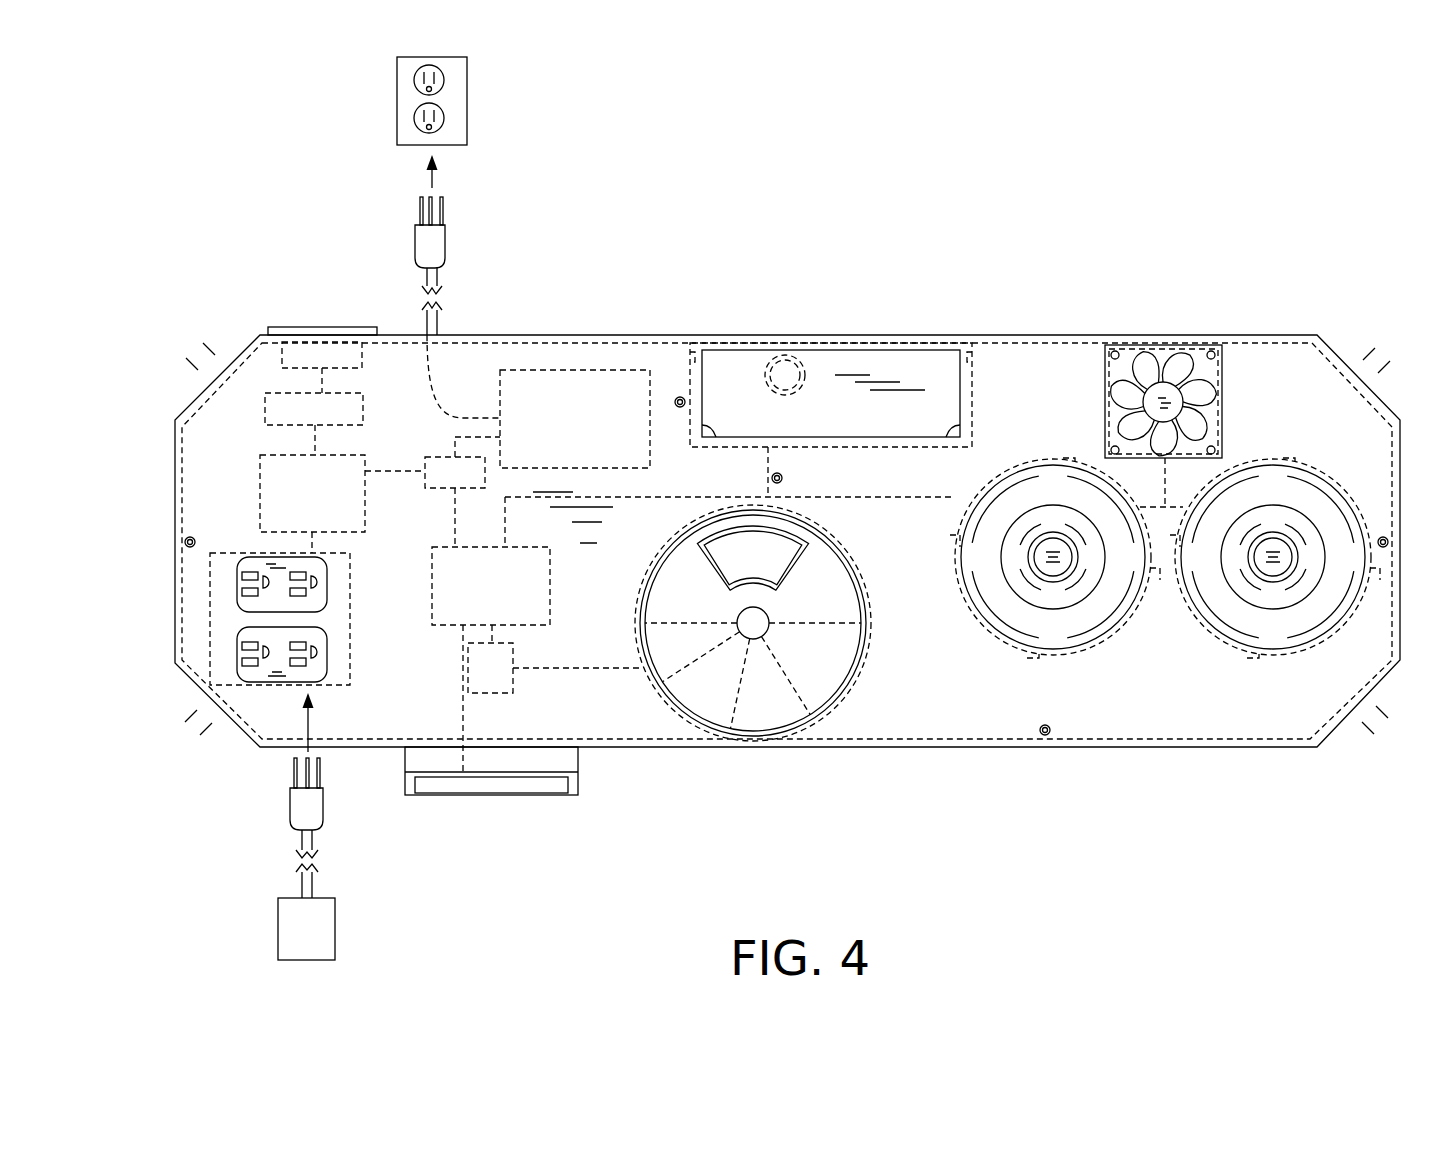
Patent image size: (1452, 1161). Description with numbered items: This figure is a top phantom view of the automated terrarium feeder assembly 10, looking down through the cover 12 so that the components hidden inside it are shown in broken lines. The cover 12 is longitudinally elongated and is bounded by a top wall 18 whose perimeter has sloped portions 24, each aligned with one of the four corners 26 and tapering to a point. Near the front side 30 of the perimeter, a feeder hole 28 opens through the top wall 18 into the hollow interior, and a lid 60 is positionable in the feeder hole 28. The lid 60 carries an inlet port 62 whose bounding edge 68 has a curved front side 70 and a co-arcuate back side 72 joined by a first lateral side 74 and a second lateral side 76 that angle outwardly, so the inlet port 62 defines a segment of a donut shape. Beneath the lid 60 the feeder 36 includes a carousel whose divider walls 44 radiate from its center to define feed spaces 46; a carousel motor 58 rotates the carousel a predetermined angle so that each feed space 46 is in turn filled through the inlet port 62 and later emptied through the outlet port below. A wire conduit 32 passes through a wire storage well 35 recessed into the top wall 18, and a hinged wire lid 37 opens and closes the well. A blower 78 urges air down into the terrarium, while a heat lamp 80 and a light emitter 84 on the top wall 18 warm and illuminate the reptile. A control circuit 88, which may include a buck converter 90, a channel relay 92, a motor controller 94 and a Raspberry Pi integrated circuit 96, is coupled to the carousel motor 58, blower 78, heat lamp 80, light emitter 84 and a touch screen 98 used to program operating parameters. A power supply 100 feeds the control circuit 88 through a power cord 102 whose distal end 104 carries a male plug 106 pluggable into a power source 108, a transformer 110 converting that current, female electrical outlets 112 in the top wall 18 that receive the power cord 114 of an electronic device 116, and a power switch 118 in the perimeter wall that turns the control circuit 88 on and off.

The automated terrarium feeder assembly 10 is at (787, 423).
The cover 12 is at (1273, 335).
The top wall 18 is at (1018, 335).
The sloped portions 24 is at (210, 333).
The corners 26 is at (175, 335).
The feeder hole 28 is at (794, 670).
The front side 30 is at (755, 748).
The wire conduit 32 is at (798, 362).
The wire storage well 35 is at (939, 366).
The feeder 36 is at (723, 665).
The wire lid 37 is at (690, 377).
The divider walls 44 is at (683, 667).
The feed spaces 46 is at (672, 572).
The carousel motor 58 is at (760, 640).
The lid 60 is at (532, 370).
The inlet port 62 is at (747, 551).
The bounding edge 68 is at (722, 540).
The front side 70 is at (740, 592).
The back side 72 is at (790, 545).
The first lateral side 74 is at (713, 550).
The second lateral side 76 is at (803, 550).
The blower 78 is at (1160, 390).
The heat lamp 80 is at (1097, 642).
The light emitter 84 is at (1283, 650).
The control circuit 88 is at (432, 625).
The buck converter 90 is at (435, 457).
The channel relay 92 is at (260, 455).
The motor controller 94 is at (513, 690).
The Raspberry Pi integrated circuit 96 is at (455, 627).
The touch screen 98 is at (495, 788).
The power supply 100 is at (401, 262).
The power cord 102 is at (427, 288).
The distal end 104 is at (437, 305).
The male plug 106 is at (423, 232).
The power source 108 is at (397, 60).
The transformer 110 is at (650, 580).
The female electrical outlets 112 is at (237, 648).
The power cord 114 is at (297, 843).
The electronic device 116 is at (278, 922).
The power switch 118 is at (322, 327).